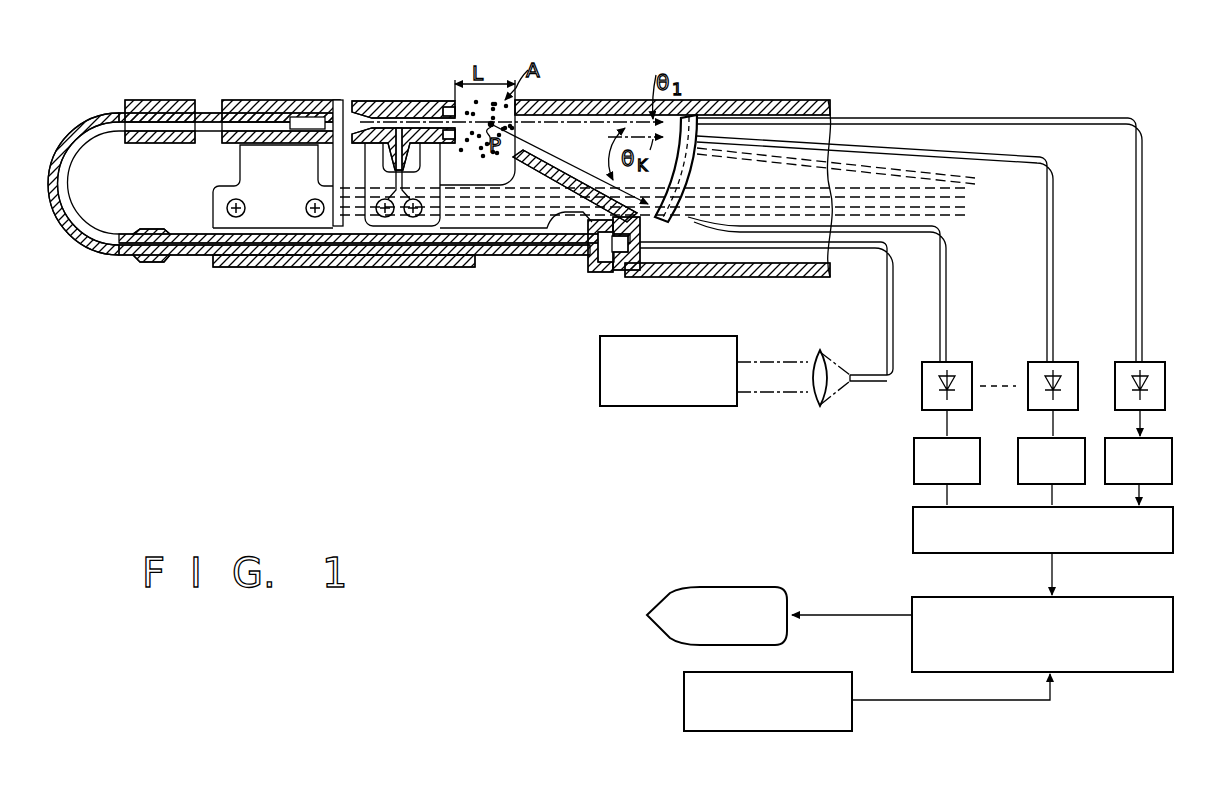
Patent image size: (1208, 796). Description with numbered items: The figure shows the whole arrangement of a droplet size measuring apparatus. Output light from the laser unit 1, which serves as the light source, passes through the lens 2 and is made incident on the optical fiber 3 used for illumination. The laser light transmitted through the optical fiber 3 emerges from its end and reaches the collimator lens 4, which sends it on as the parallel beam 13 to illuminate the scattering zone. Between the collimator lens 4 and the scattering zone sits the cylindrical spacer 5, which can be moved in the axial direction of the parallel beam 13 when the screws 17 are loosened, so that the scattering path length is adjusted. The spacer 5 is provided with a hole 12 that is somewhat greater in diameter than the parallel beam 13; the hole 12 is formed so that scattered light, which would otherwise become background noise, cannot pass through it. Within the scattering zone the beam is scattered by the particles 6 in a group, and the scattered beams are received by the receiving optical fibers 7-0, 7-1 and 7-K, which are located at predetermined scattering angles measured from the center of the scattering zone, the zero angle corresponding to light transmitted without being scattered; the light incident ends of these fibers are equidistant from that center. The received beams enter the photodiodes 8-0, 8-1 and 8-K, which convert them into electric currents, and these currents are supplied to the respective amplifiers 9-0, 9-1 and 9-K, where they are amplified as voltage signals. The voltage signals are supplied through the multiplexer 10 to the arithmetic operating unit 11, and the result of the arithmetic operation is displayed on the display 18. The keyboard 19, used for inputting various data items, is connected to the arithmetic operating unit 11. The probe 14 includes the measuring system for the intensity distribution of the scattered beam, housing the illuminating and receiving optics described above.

The laser unit 1 is at (716, 336).
The lens 2 is at (820, 350).
The optical fiber 3 is at (887, 282).
The collimator lens 4 is at (297, 117).
The cylindrical spacer 5 is at (368, 101).
The particles 6 is at (470, 140).
The receiving optical fiber 7-0 is at (1056, 122).
The receiving optical fiber 7-1 is at (1057, 168).
The receiving optical fiber 7-K is at (948, 233).
The photodiode 8-K is at (953, 366).
The photodiode 8-1 is at (1059, 366).
The photodiode 8-0 is at (1146, 366).
The amplifier 9-K is at (914, 444).
The amplifier 9-1 is at (1022, 444).
The amplifier 9-0 is at (1172, 444).
The multiplexer 10 is at (913, 516).
The arithmetic operating unit 11 is at (912, 640).
The hole 12 is at (440, 113).
The parallel beam 13 is at (400, 120).
The probe 14 is at (572, 100).
The screws 17 is at (412, 217).
The display 18 is at (745, 587).
The keyboard 19 is at (684, 680).